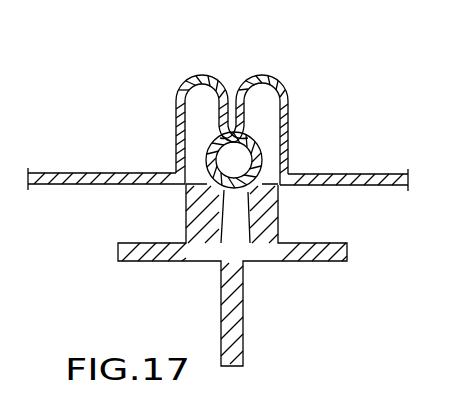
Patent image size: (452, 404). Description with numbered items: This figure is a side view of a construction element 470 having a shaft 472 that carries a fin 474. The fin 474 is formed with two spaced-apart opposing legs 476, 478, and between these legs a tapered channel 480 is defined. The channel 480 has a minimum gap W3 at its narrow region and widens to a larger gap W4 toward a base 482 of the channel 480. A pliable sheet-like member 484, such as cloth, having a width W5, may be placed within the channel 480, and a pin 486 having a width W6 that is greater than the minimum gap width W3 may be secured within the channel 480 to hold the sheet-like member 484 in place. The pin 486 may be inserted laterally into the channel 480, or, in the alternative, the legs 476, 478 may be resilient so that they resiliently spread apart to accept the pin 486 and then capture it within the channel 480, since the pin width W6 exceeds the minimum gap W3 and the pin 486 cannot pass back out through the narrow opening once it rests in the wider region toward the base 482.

The construction element 470 is at (226, 275).
The shaft 472 is at (245, 262).
The fin 474 is at (257, 232).
The leg 476 is at (221, 103).
The leg 478 is at (194, 130).
The tapered channel 480 is at (280, 193).
The base 482 is at (242, 293).
The pliable sheet-like member 484 is at (50, 172).
The pin 486 is at (284, 131).
The minimum gap W3 is at (150, 113).
The larger gap W4 is at (155, 160).
The width of sheet-like member W5 is at (100, 148).
The width of pin W6 is at (224, 172).